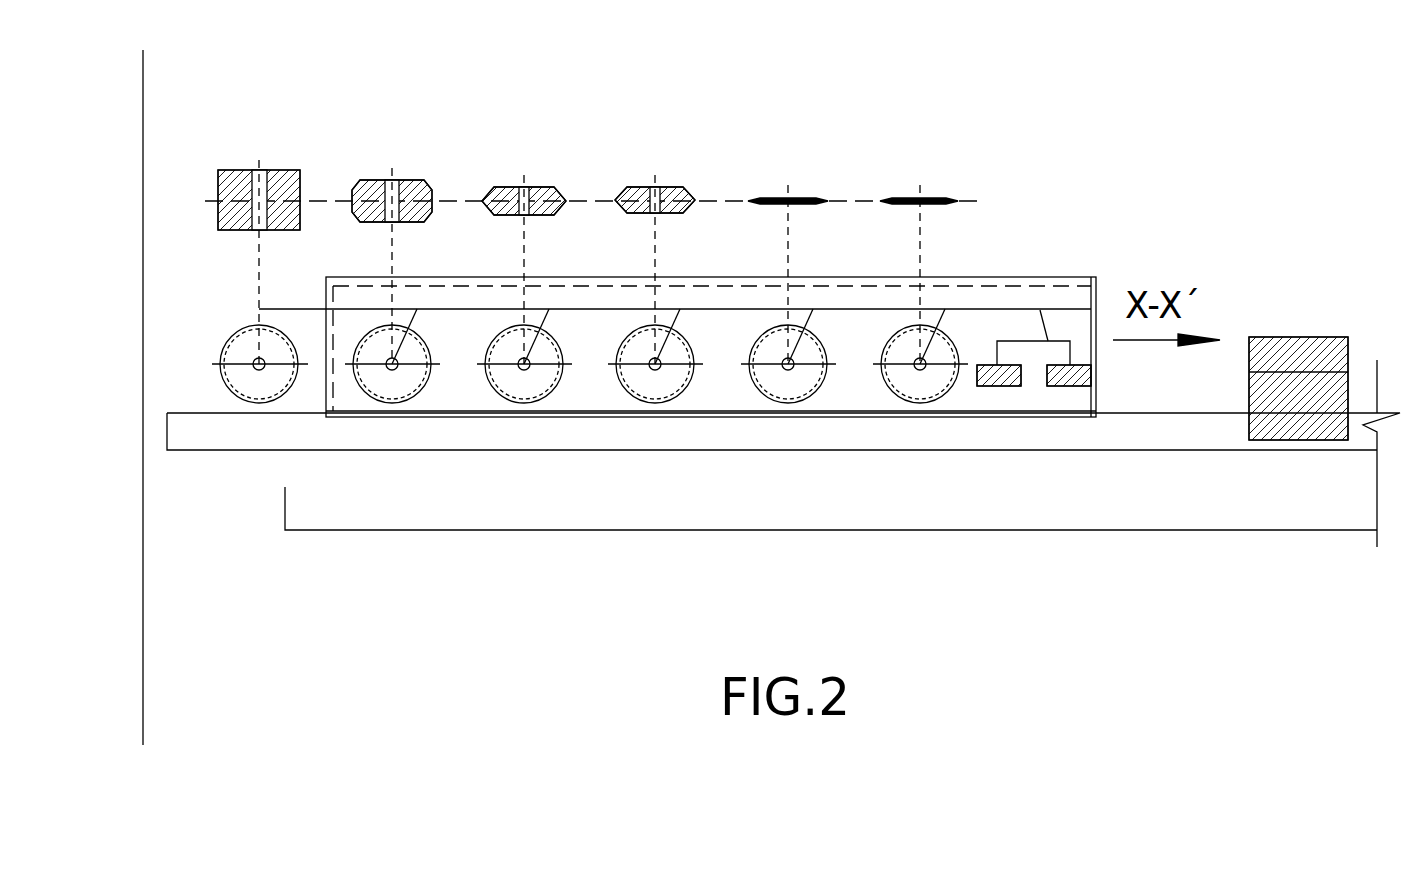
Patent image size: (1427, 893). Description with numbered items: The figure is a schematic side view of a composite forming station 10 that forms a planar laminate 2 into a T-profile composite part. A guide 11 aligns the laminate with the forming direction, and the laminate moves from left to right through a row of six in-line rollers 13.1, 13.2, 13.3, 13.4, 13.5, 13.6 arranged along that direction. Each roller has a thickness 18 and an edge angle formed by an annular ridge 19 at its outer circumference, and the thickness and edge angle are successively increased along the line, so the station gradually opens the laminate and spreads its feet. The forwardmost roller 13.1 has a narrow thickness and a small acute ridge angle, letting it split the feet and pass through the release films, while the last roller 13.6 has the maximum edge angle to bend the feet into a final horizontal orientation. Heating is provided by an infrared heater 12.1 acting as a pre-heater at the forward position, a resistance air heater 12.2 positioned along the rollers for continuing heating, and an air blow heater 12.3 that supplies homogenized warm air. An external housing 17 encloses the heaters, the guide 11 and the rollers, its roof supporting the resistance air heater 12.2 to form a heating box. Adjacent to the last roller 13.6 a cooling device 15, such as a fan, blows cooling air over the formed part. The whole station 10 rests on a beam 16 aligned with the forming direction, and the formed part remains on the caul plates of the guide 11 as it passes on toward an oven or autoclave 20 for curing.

The planar laminate 2 is at (1320, 290).
The composite forming station 10 is at (345, 80).
The guide 11 is at (760, 305).
The infrared heater 12.1 is at (1046, 422).
The resistance air heater 12.2 is at (1060, 286).
The air blow heater 12.3 is at (586, 277).
The forwardmost roller 13.1 is at (917, 425).
The in-line roller 13.2 is at (782, 425).
The in-line roller 13.3 is at (650, 425).
The in-line roller 13.4 is at (518, 425).
The in-line roller 13.5 is at (388, 425).
The last roller 13.6 is at (256, 425).
The cooling device 15 is at (190, 350).
The beam 16 is at (1205, 503).
The external housing 17 is at (943, 277).
The thickness 18 is at (371, 168).
The annular ridge 19 is at (718, 159).
The oven or autoclave 20 is at (104, 397).